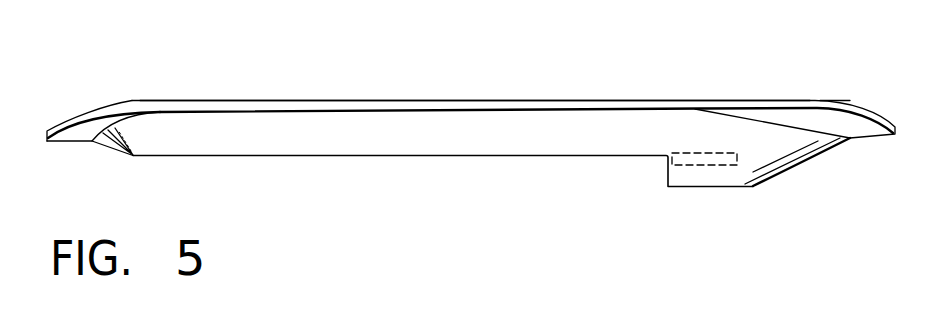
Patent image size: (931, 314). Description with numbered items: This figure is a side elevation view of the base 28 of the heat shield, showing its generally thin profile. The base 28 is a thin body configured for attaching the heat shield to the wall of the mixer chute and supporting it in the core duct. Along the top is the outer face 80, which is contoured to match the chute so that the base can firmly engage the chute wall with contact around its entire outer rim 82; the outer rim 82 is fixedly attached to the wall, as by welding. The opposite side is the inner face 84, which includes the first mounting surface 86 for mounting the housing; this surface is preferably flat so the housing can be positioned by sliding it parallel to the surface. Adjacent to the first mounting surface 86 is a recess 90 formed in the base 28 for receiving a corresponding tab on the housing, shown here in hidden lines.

The base 28 is at (422, 97).
The outer face 80 is at (350, 100).
The outer rim 82 is at (735, 98).
The inner face 84 is at (273, 156).
The first mounting surface 86 is at (402, 156).
The recess 90 is at (684, 165).